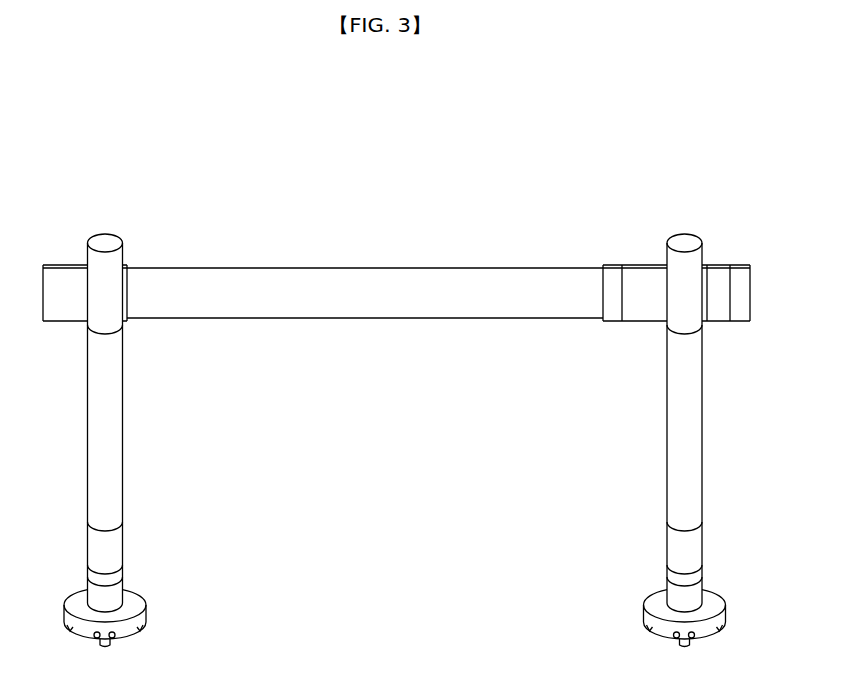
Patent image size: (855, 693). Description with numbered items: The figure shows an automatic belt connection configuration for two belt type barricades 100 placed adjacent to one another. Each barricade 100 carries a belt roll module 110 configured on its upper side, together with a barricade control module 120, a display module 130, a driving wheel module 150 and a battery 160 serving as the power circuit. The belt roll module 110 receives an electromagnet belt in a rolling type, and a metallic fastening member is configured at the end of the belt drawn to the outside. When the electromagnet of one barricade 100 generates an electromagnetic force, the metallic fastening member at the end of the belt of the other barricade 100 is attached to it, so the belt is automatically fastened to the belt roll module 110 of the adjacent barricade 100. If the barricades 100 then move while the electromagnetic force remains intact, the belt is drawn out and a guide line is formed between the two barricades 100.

The belt type barricade 100 is at (604, 109).
The belt roll module 110 is at (639, 277).
The barricade control module 120 is at (703, 573).
The display module 130 is at (703, 401).
The driving wheel module 150 is at (722, 621).
The battery 160 is at (657, 630).